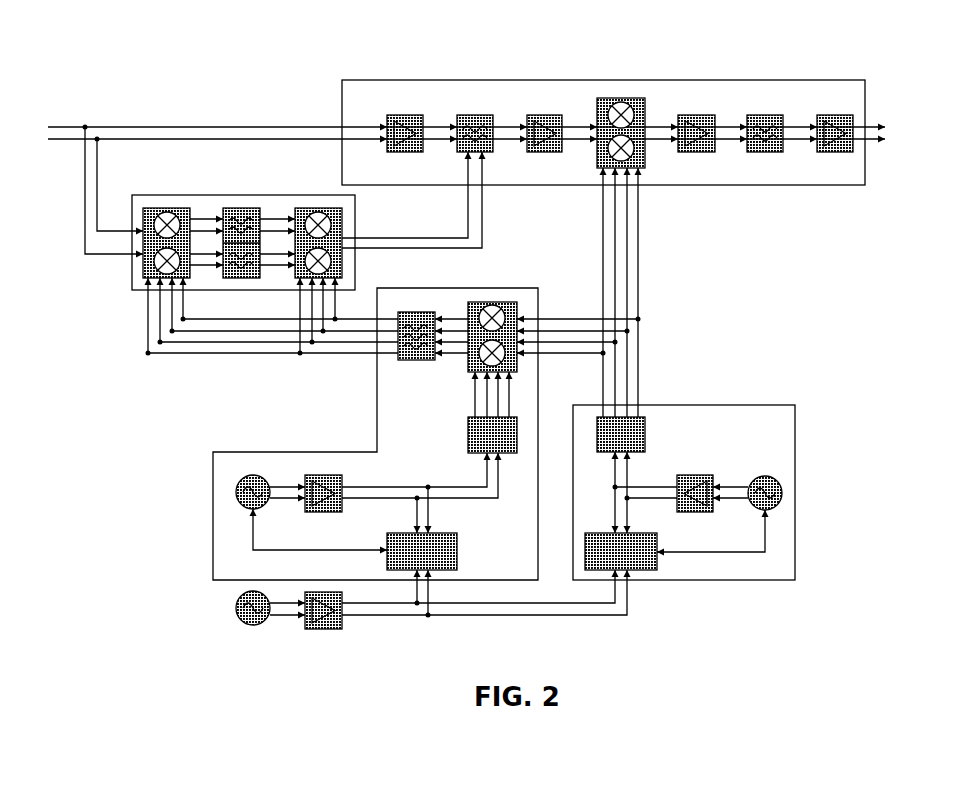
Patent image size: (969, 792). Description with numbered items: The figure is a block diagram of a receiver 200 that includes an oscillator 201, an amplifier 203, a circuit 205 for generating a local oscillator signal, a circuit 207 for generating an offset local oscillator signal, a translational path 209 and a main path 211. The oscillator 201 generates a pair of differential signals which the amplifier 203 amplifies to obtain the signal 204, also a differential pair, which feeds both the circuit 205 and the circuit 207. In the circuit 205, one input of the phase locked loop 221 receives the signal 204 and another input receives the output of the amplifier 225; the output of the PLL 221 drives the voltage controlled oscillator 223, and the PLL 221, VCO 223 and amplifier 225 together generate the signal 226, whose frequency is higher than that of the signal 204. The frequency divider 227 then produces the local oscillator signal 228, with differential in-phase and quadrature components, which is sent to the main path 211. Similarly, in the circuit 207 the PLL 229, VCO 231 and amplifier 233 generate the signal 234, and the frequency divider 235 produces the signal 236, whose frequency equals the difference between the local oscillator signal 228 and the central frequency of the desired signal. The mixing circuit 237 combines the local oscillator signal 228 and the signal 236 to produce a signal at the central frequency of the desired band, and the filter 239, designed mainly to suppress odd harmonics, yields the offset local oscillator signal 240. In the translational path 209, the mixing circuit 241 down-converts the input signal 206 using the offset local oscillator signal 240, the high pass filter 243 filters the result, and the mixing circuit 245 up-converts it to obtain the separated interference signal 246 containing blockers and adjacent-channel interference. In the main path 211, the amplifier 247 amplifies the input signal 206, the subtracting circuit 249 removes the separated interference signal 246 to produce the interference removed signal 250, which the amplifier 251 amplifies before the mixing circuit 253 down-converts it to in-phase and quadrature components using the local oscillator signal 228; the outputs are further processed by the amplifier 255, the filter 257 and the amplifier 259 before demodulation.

The receiver 200 is at (137, 55).
The oscillator 201 is at (243, 622).
The amplifier 203 is at (328, 623).
The signal 204 is at (458, 603).
The circuit for generating local oscillator signal 205 is at (765, 413).
The input signal 206 is at (50, 139).
The circuit for generating offset local oscillator signal 207 is at (378, 438).
The translational path 209 is at (193, 202).
The main path 211 is at (342, 107).
The phase locked loop 221 is at (638, 567).
The voltage controlled oscillator 223 is at (752, 508).
The amplifier 225 is at (693, 477).
The signal 226 is at (603, 242).
The frequency divider 227 is at (645, 435).
The local oscillator signal 228 is at (615, 470).
The phase locked loop 229 is at (455, 553).
The voltage controlled oscillator 231 is at (267, 510).
The amplifier 233 is at (327, 508).
The signal 234 is at (498, 476).
The frequency divider 235 is at (468, 435).
The signal 236 is at (475, 395).
The mixing circuit 237 is at (480, 302).
The filter 239 is at (424, 362).
The offset local oscillator signal 240 is at (202, 354).
The mixing circuit 241 is at (143, 268).
The high pass filter 243 is at (243, 207).
The mixing circuit 245 is at (327, 207).
The separated interference signal 246 is at (405, 249).
The amplifier 247 is at (400, 115).
The subtracting circuit 249 is at (472, 115).
The interference removed signal 250 is at (505, 127).
The amplifier 251 is at (540, 115).
The mixing circuit 253 is at (610, 97).
The amplifier 255 is at (692, 115).
The filter 257 is at (760, 115).
The amplifier 259 is at (830, 115).